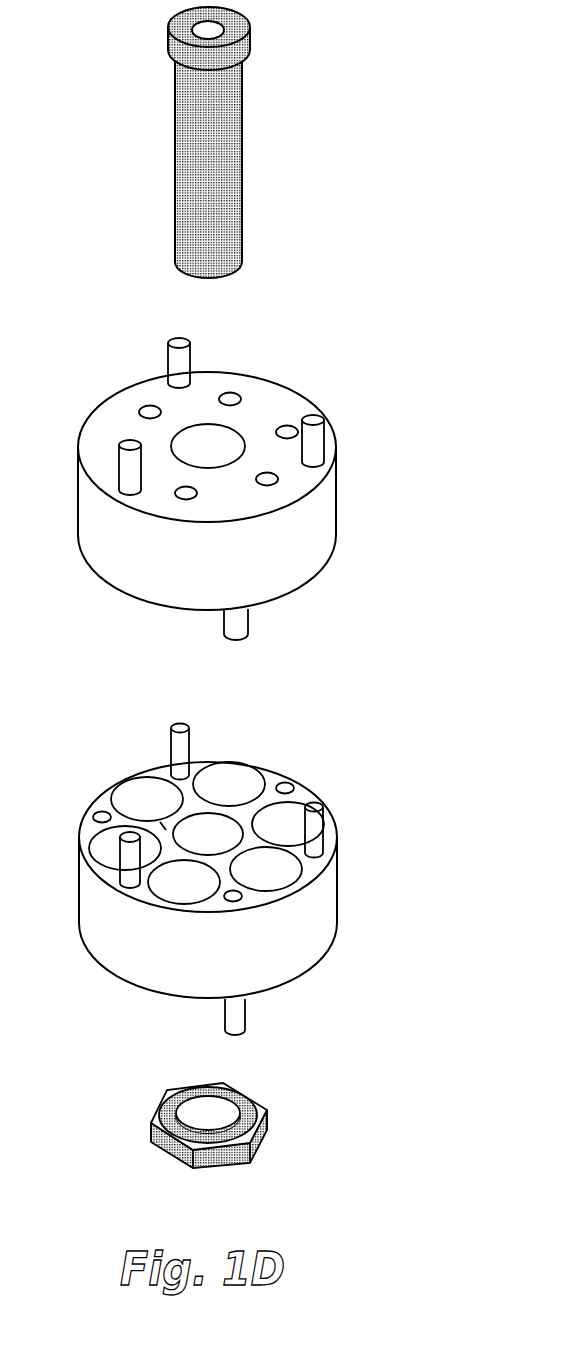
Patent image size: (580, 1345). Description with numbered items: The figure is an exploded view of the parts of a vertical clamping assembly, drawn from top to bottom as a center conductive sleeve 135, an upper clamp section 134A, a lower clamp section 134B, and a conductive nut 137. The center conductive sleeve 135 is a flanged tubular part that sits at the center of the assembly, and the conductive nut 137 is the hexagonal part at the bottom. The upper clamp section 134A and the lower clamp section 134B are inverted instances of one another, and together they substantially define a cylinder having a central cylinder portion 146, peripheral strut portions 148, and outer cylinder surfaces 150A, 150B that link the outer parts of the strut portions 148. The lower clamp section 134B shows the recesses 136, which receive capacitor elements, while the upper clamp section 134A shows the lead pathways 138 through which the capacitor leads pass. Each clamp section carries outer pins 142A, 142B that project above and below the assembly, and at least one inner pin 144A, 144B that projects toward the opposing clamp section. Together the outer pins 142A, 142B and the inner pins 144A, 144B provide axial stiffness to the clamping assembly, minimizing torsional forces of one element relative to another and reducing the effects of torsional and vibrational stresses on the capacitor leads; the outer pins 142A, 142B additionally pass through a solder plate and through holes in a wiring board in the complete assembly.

The center conductive sleeve 135 is at (176, 107).
The upper clamp section 134A is at (371, 462).
The outer cylinder surface 150A is at (308, 532).
The lead pathways 138 is at (287, 432).
The outer pins 142A is at (178, 359).
The inner pin 144A is at (249, 628).
The lower clamp section 134B is at (371, 857).
The outer cylinder surface 150B is at (317, 910).
The recesses 136 is at (247, 787).
The central cylinder portion 146 is at (163, 827).
The peripheral strut portions 148 is at (102, 817).
The inner pin 144B is at (183, 748).
The outer pins 142B is at (249, 1023).
The conductive nut 137 is at (258, 1103).